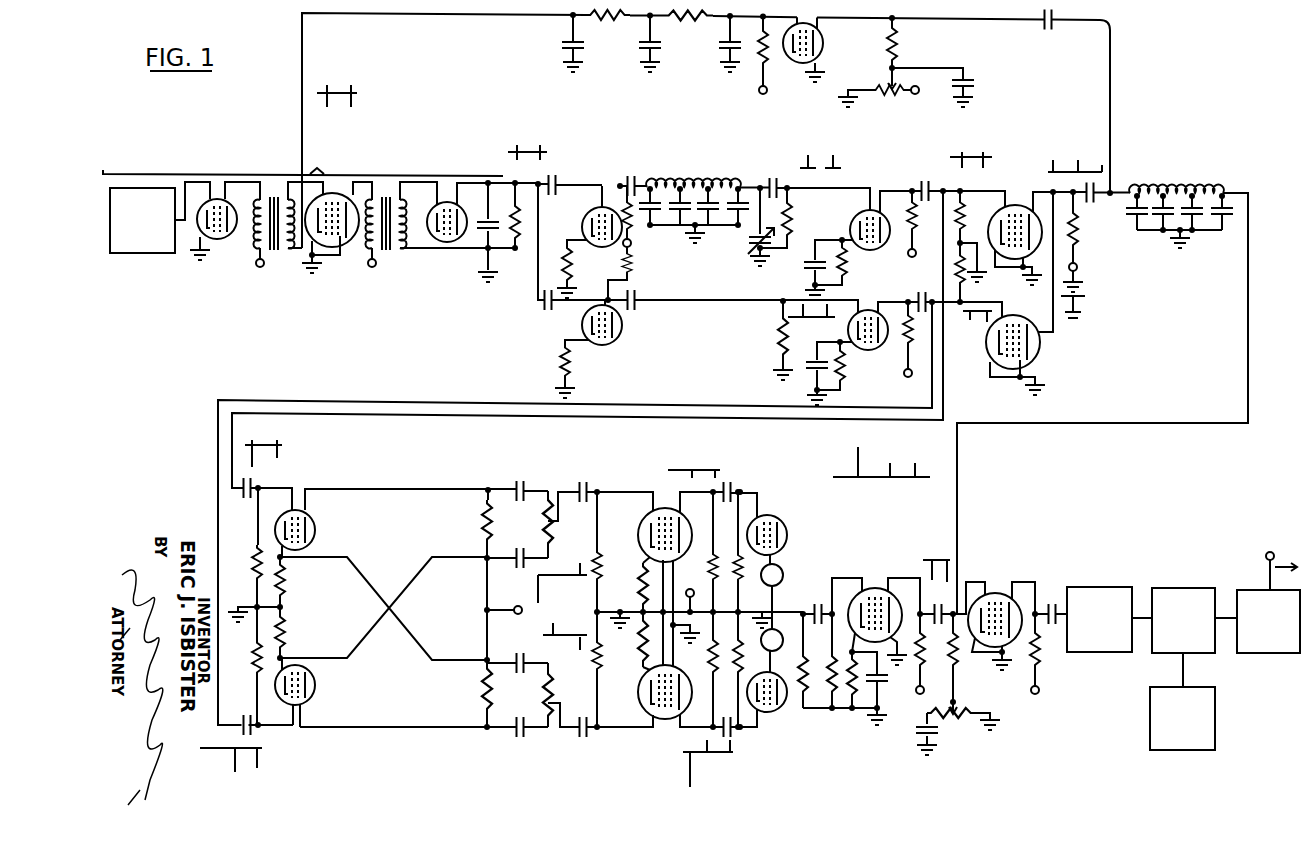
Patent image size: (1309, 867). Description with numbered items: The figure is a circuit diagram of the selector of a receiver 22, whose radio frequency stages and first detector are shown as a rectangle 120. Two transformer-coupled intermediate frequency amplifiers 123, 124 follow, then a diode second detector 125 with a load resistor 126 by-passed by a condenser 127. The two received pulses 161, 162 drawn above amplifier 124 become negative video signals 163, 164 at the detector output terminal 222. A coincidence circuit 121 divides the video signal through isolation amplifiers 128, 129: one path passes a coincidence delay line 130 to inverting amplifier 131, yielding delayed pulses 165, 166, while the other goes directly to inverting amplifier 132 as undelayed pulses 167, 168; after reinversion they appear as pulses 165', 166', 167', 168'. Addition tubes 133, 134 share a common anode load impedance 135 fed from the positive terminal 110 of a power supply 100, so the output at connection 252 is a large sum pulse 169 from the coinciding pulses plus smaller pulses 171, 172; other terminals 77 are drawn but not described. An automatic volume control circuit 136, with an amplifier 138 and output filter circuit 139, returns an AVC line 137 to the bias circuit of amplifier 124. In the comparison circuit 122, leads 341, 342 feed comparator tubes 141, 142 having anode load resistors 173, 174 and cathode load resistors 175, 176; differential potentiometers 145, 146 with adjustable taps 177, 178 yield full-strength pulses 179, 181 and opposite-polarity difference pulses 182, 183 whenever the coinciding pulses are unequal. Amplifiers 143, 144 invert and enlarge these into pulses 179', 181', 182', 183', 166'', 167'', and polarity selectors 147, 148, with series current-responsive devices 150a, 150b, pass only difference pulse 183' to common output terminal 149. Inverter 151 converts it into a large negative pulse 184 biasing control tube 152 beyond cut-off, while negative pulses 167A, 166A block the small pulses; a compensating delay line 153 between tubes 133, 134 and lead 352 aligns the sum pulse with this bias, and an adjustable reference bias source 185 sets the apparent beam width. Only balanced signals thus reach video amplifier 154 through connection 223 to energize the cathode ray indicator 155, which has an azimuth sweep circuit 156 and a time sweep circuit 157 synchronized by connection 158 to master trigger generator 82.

The radio frequency stages 120 is at (140, 174).
The radio receiver 22 is at (308, 161).
The intermediate frequency amplifier 123 is at (228, 242).
The positive terminal 110 is at (262, 268).
The intermediate frequency amplifier 124 is at (344, 190).
The second detector 125 is at (442, 192).
The condenser 127 is at (480, 242).
The resistor 126 is at (522, 250).
The second detector output terminal 222 is at (549, 171).
The video signal 163 is at (523, 150).
The video signal 164 is at (541, 150).
The AVC line 137 is at (438, 14).
The pulse 161 is at (336, 84).
The pulse 162 is at (348, 84).
The output filter circuit 139 is at (669, 22).
The amplifier 138 is at (824, 46).
The automatic volume control circuit 136 is at (776, 114).
The bias voltage terminal 77 is at (918, 96).
The isolation amplifier 128 is at (601, 183).
The coincidence delay line 130 is at (688, 182).
The coincidence circuit 121 is at (681, 281).
The inverting amplifier 131 is at (871, 188).
The pulse 165 is at (800, 149).
The pulse 166 is at (841, 149).
The inverted pulse 165' is at (610, 298).
The inverted pulse 166' is at (641, 405).
The addition amplifier 133 is at (1017, 204).
The pulse 171 is at (1053, 158).
The pulse 169 is at (1078, 158).
The pulse 172 is at (1102, 163).
The addition circuit output connection 252 is at (1096, 206).
The common anode load impedance 135 is at (1081, 248).
The power supply 100 is at (1090, 300).
The compensating delay line 153 is at (1196, 188).
The lead 352 is at (1071, 424).
The isolation amplifier 129 is at (623, 333).
The pulse 167 is at (765, 340).
The pulse 168 is at (811, 323).
The inverting amplifier 132 is at (873, 352).
The inverted pulse 167' is at (588, 544).
The inverted pulse 168' is at (621, 544).
The addition amplifier 134 is at (1042, 345).
The lead 341 is at (480, 418).
The lead 342 is at (478, 404).
The comparison circuit 122 is at (380, 472).
The comparator tube 141 is at (312, 527).
The comparator tube 142 is at (313, 692).
The cathode load resistor 175 is at (296, 582).
The cathode load resistor 176 is at (296, 644).
The anode load resistor 173 is at (478, 523).
The anode load resistor 174 is at (480, 684).
The differential potentiometer 145 is at (543, 525).
The adjustable tap 177 is at (553, 525).
The differential potentiometer 146 is at (543, 695).
The adjustable tap 178 is at (553, 695).
The pulse 182 is at (562, 558).
The pulse 181 is at (571, 588).
The pulse 179 is at (565, 619).
The pulse 183 is at (556, 649).
The pulse 167'' is at (770, 460).
The inverted pulse 182' is at (674, 458).
The inverted pulse 181' is at (729, 458).
The coincidence difference pulse 183' is at (797, 609).
The pulse 166'' is at (844, 605).
The inverted pulse 179' is at (667, 769).
The amplifier 143 is at (666, 507).
The amplifier 144 is at (668, 719).
The polarity selector 147 is at (787, 526).
The polarity selector 148 is at (787, 719).
The current-responsive device 150a is at (784, 572).
The current-responsive device 150b is at (769, 628).
The common output terminal 149 is at (804, 612).
The inverting amplifier 151 is at (877, 588).
The negative pulse 184 is at (925, 561).
The negative pulse 166A is at (957, 562).
The negative pulse 167A is at (978, 571).
The control tube 152 is at (996, 592).
The adjustable reference bias source 185 is at (960, 703).
The video amplifier input connection 223 is at (1052, 601).
The video amplifier 154 is at (1095, 587).
The cathode ray indicator 155 is at (1165, 588).
The time sweep circuit 157 is at (1247, 590).
The synchronizing connection 158 is at (1265, 552).
The master trigger generator 82 is at (1212, 540).
The azimuth sweep circuit 156 is at (1217, 732).